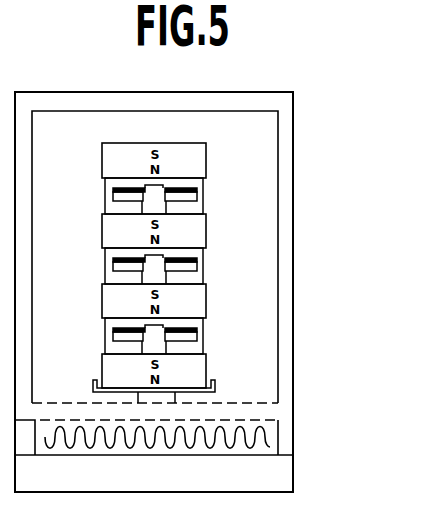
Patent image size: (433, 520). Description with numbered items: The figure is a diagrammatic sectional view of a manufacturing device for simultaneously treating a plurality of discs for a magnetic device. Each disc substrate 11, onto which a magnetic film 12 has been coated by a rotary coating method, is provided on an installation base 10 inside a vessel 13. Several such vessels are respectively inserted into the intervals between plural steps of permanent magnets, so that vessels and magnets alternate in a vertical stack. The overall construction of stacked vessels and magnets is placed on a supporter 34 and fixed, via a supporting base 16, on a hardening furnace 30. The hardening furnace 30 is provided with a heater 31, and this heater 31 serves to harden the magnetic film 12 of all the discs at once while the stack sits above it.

The installation base 10 is at (166, 280).
The disc substrate 11 is at (168, 259).
The magnetic film 12 is at (186, 260).
The vessel 13 is at (203, 270).
The supporting base 16 is at (147, 397).
The hardening furnace 30 is at (285, 363).
The heater 31 is at (257, 432).
The supporter 34 is at (95, 385).